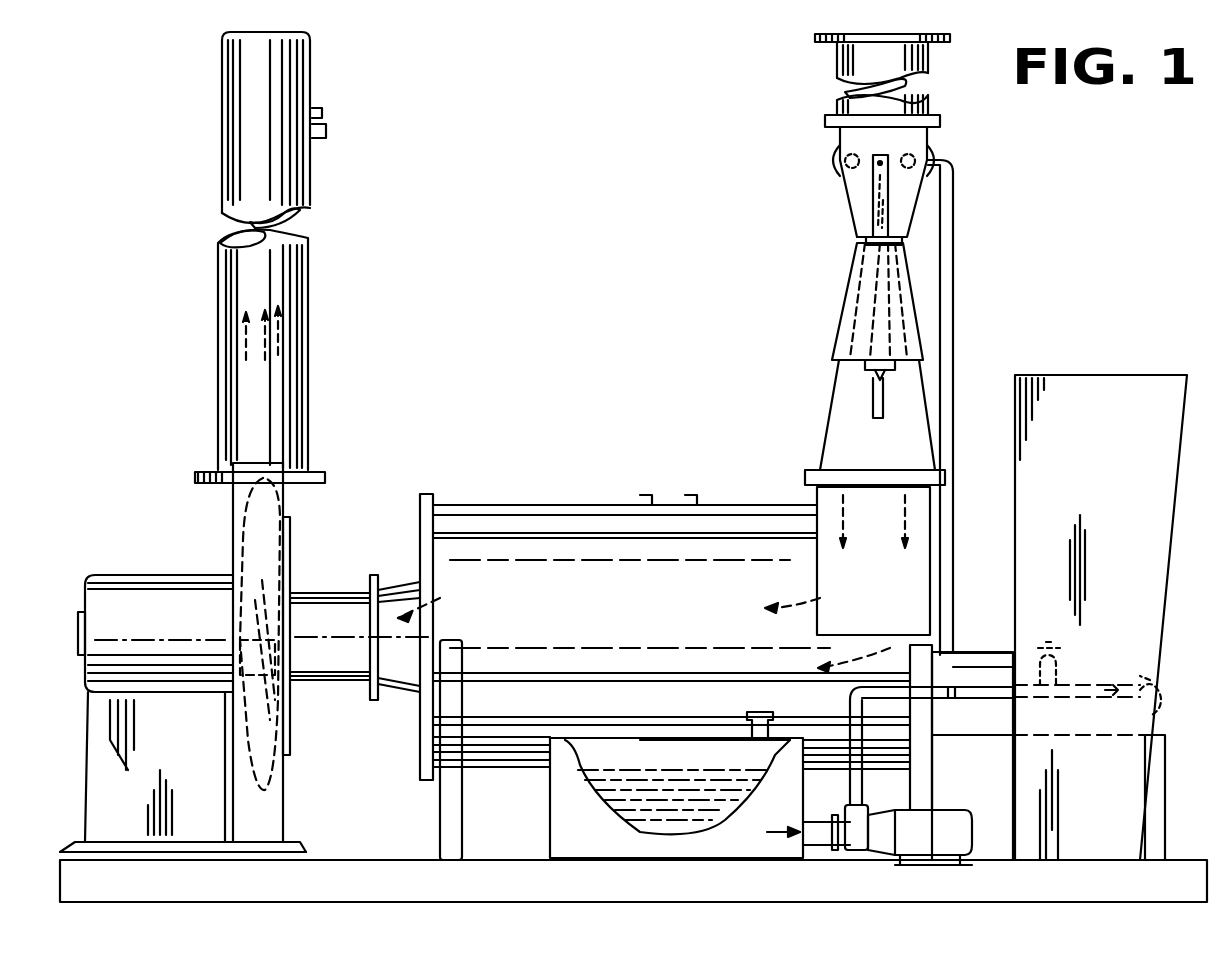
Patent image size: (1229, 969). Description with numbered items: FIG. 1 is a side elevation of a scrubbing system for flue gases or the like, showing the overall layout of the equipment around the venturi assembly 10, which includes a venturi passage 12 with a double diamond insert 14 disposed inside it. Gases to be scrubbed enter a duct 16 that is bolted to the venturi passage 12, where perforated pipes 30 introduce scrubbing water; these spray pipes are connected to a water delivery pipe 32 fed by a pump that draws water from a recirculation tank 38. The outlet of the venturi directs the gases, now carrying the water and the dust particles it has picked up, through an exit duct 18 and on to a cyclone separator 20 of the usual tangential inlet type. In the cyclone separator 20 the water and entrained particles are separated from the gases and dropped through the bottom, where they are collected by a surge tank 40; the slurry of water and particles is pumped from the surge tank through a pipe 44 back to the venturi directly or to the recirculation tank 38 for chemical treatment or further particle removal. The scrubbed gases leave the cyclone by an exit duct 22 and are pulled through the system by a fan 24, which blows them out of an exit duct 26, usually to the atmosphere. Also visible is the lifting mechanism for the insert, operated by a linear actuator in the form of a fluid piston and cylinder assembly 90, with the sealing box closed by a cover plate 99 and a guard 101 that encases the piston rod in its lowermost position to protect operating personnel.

The venturi assembly 10 is at (840, 202).
The venturi passage 12 is at (905, 240).
The double diamond insert 14 is at (870, 296).
The duct 16 is at (850, 70).
The exit duct 18 is at (882, 576).
The cyclone separator 20 is at (680, 614).
The exit duct 22 is at (300, 598).
The fan 24 is at (240, 544).
The exit duct 26 is at (302, 248).
The perforated pipes 30 is at (903, 152).
The water delivery pipe 32 is at (953, 303).
The recirculation tank 38 is at (990, 779).
The surge tank 40 is at (735, 768).
The pipe 44 is at (958, 698).
The fluid piston and cylinder assembly 90 is at (873, 183).
The cover plate 99 is at (855, 313).
The guard 101 is at (838, 390).